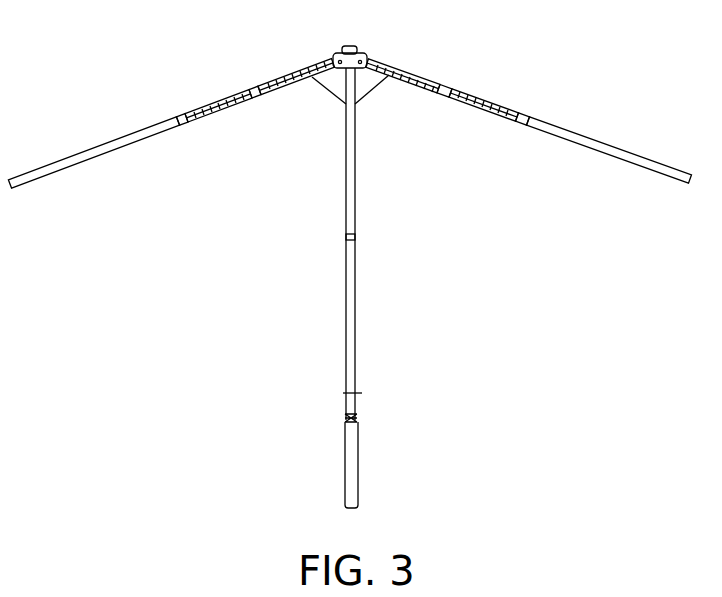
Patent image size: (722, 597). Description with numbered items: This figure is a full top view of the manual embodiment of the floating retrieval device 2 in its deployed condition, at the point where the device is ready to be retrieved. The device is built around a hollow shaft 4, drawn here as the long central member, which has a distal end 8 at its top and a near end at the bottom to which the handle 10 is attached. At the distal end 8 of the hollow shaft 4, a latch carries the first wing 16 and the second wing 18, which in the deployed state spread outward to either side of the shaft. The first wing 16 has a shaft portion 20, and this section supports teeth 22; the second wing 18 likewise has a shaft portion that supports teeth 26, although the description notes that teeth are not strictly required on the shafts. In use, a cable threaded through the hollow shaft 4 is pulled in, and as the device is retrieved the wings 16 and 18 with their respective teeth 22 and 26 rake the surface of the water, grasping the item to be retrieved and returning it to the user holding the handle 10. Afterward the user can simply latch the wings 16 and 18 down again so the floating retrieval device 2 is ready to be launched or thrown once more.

The floating retrieval device 2 is at (282, 232).
The hollow shaft 4 is at (356, 287).
The distal end 8 is at (8, 253).
The handle 10 is at (358, 462).
The first wing 16 is at (148, 128).
The second wing 18 is at (577, 133).
The shaft portion 20 is at (451, 52).
The teeth 22 is at (208, 104).
The teeth 26 is at (470, 97).